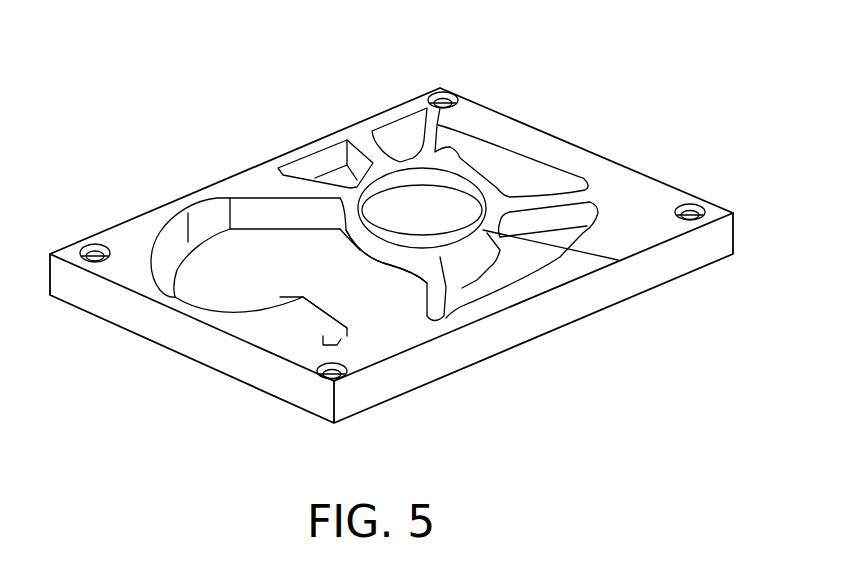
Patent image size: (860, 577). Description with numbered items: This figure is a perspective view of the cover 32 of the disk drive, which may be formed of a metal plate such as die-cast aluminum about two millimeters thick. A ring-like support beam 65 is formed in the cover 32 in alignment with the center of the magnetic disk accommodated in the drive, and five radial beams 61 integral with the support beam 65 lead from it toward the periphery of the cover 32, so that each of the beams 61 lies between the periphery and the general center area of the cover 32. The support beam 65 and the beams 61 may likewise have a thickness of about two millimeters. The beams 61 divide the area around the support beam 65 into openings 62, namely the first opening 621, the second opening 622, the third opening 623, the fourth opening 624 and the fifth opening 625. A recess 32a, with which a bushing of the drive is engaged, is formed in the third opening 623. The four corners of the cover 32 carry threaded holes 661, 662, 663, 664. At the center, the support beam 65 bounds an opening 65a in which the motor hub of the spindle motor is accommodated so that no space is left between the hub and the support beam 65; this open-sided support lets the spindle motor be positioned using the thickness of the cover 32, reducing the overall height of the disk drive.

The cover 32 is at (205, 113).
The recess 32a is at (317, 357).
The radial beams 61 is at (278, 197).
The openings 62 is at (466, 218).
The first opening 621 is at (503, 158).
The second opening 622 is at (527, 260).
The third opening 623 is at (387, 312).
The fourth opening 624 is at (345, 178).
The fifth opening 625 is at (393, 118).
The support beam 65 is at (479, 249).
The opening 65a is at (397, 225).
The threaded hole 661 is at (445, 90).
The threaded hole 662 is at (692, 204).
The threaded hole 663 is at (318, 368).
The threaded hole 664 is at (92, 246).